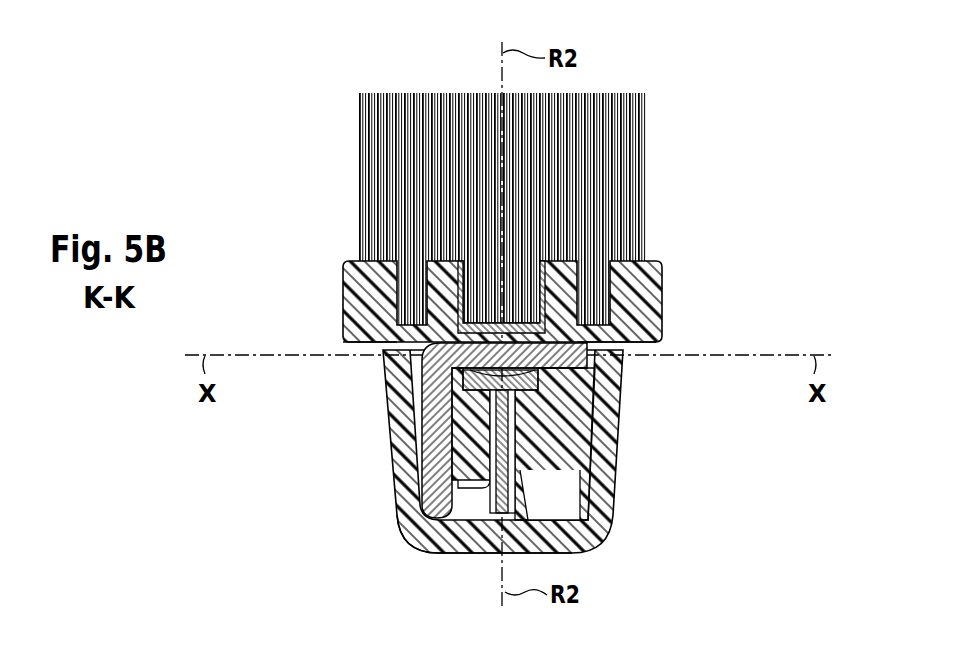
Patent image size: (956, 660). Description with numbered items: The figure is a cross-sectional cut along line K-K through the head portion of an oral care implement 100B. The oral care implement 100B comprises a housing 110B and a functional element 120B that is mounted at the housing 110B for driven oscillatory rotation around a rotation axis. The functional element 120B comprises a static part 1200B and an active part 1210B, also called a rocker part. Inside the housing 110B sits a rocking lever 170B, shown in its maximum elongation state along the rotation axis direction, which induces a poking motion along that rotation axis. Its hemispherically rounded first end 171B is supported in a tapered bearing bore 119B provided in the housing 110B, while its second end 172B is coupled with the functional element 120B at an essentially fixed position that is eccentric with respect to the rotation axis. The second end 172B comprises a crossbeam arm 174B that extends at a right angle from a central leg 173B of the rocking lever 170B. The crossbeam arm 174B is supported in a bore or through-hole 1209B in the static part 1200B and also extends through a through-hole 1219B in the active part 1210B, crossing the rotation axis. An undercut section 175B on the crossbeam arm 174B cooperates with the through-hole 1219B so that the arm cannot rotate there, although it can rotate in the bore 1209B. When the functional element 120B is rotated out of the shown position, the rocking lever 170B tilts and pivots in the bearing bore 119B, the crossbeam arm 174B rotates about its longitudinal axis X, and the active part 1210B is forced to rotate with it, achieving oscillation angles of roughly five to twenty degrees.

The oral care implement 100B is at (262, 175).
The functional element 120B is at (679, 229).
The static part 1200B is at (662, 285).
The bore or through-hole 1209B is at (618, 323).
The active part 1210B is at (546, 263).
The second end 172B is at (353, 337).
The crossbeam arm 174B is at (580, 364).
The undercut section 175B is at (537, 378).
The rocking lever 170B is at (408, 406).
The central leg 173B is at (458, 447).
The first end 171B is at (447, 497).
The through-hole 1219B is at (590, 410).
The housing 110B is at (602, 500).
The tapered bearing bore 119B is at (415, 540).